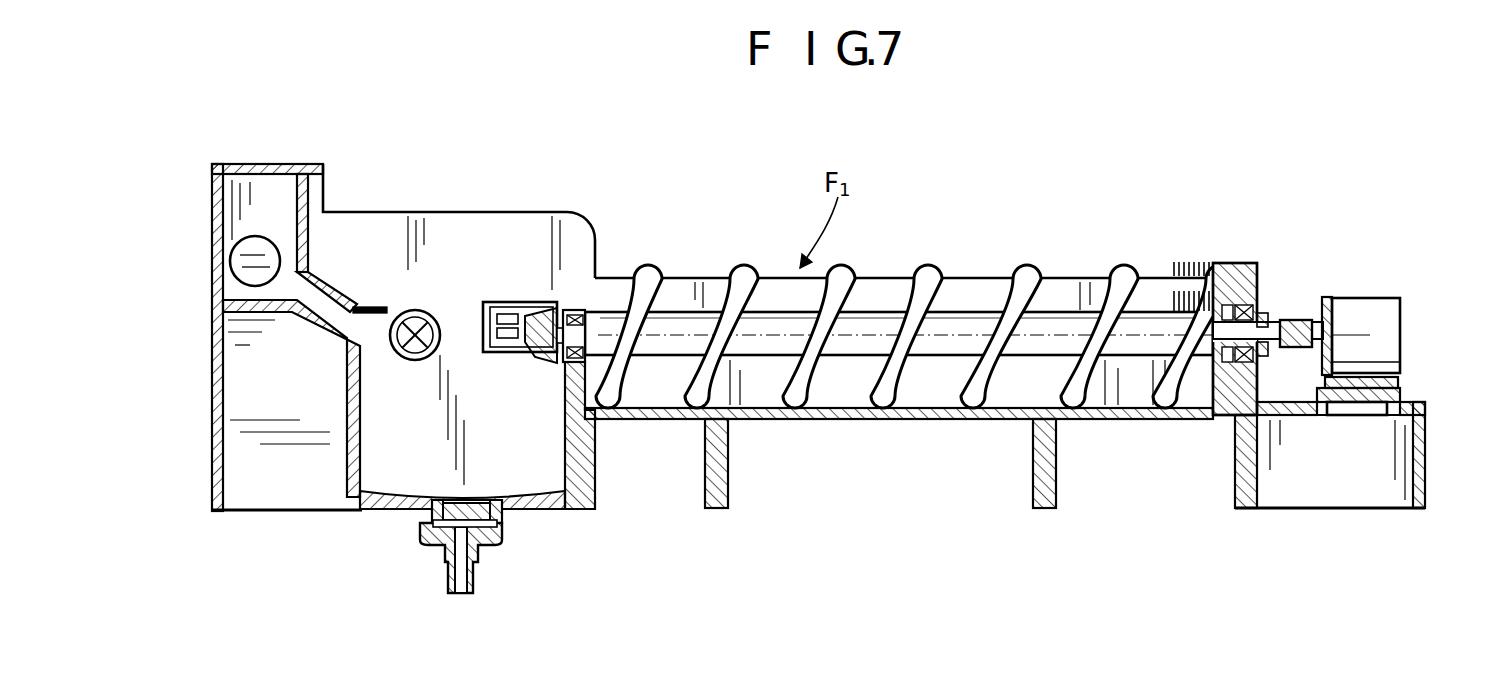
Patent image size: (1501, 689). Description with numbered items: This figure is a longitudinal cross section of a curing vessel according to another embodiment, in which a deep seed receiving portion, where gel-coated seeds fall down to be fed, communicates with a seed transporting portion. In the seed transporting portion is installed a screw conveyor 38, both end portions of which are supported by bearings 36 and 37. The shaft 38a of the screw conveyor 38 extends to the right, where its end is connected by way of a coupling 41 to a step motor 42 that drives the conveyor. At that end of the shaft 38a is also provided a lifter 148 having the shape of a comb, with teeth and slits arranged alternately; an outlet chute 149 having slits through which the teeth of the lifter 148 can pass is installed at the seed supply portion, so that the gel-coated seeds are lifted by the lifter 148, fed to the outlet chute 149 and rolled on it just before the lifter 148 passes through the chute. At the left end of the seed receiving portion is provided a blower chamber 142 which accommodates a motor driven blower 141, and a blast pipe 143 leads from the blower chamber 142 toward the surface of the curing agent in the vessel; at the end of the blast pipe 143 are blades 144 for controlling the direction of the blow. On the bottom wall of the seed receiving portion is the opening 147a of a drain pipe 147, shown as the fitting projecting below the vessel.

The motor driven blower 141 is at (240, 261).
The blower chamber 142 is at (262, 164).
The blast pipe 143 is at (336, 290).
The blades 144 is at (376, 308).
The bearing 36 is at (570, 312).
The screw conveyor 38 is at (1020, 266).
The shaft 38a is at (1232, 342).
The lifter 148 is at (1188, 262).
The outlet chute 149 is at (1232, 263).
The bearing 37 is at (1262, 313).
The coupling 41 is at (1298, 320).
The step motor 42 is at (1397, 325).
The outlet opening 147a is at (432, 514).
The drain pipe 147 is at (480, 557).